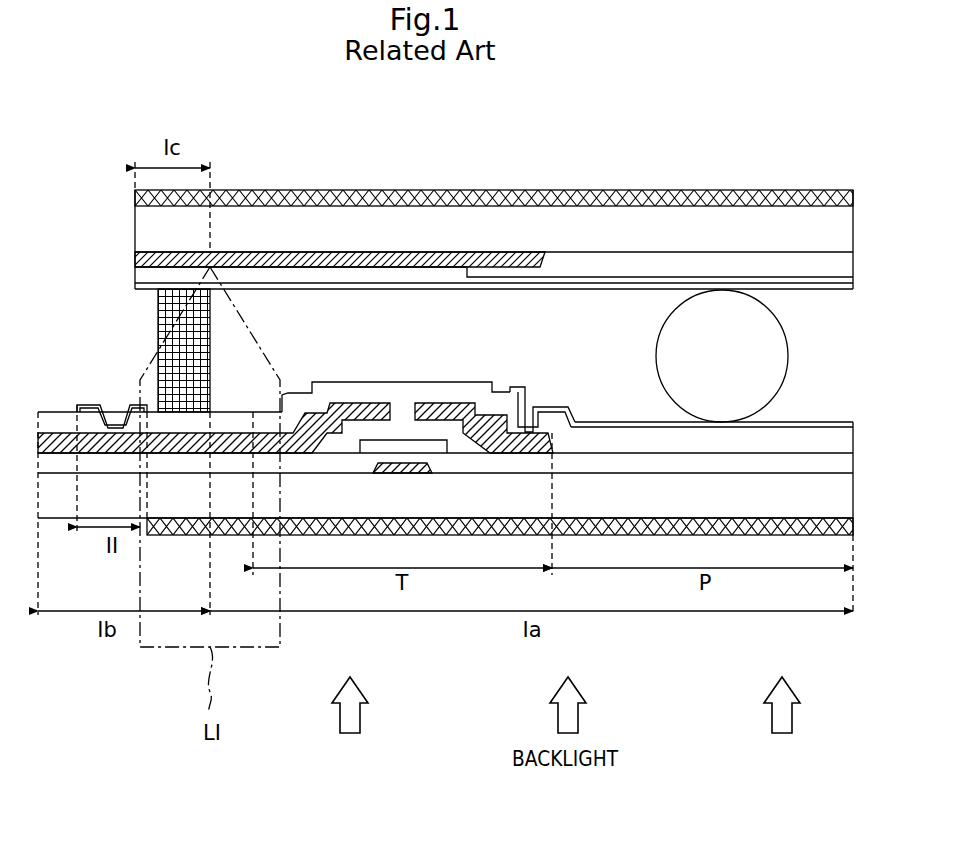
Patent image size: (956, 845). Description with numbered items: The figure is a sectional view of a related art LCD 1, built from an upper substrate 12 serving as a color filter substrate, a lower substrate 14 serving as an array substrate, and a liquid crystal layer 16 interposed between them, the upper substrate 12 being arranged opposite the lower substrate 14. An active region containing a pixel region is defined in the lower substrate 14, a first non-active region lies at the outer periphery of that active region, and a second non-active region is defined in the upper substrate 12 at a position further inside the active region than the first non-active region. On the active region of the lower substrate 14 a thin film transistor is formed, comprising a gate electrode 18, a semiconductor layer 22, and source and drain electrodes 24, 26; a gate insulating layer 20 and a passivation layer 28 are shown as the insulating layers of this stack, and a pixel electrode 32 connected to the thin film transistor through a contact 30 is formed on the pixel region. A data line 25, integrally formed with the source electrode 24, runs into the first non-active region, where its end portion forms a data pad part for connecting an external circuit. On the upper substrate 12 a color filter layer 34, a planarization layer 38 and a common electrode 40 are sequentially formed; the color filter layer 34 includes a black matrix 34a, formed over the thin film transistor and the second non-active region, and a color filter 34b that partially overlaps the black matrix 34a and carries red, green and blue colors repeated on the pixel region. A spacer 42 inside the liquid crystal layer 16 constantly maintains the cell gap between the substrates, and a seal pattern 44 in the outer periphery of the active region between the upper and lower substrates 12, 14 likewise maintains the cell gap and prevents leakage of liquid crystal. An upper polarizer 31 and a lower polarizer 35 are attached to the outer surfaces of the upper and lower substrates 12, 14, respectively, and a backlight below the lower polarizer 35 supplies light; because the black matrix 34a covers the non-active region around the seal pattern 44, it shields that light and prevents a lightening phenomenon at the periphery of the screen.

The liquid crystal display panel 1 is at (424, 243).
The upper substrate 12 is at (862, 190).
The lower substrate 14 is at (862, 422).
The liquid crystal layer 16 is at (862, 292).
The gate electrode 18 is at (400, 473).
The gate insulating layer 20 is at (497, 468).
The semiconductor layer 22 is at (336, 443).
The source electrode 24 is at (372, 404).
The data line 25 is at (250, 422).
The drain electrode 26 is at (448, 412).
The passivation layer 28 is at (400, 383).
The contact hole 30 is at (537, 391).
The upper polarizer 31 is at (735, 190).
The pixel electrode 32 is at (813, 422).
The color filter layer 34 is at (494, 182).
The black matrix 34a is at (528, 252).
The color filter 34b is at (583, 262).
The lower polarizer 35 is at (842, 535).
The planarization layer 38 is at (304, 279).
The common electrode 40 is at (268, 290).
The spacer 42 is at (658, 356).
The seal pattern 44 is at (158, 310).